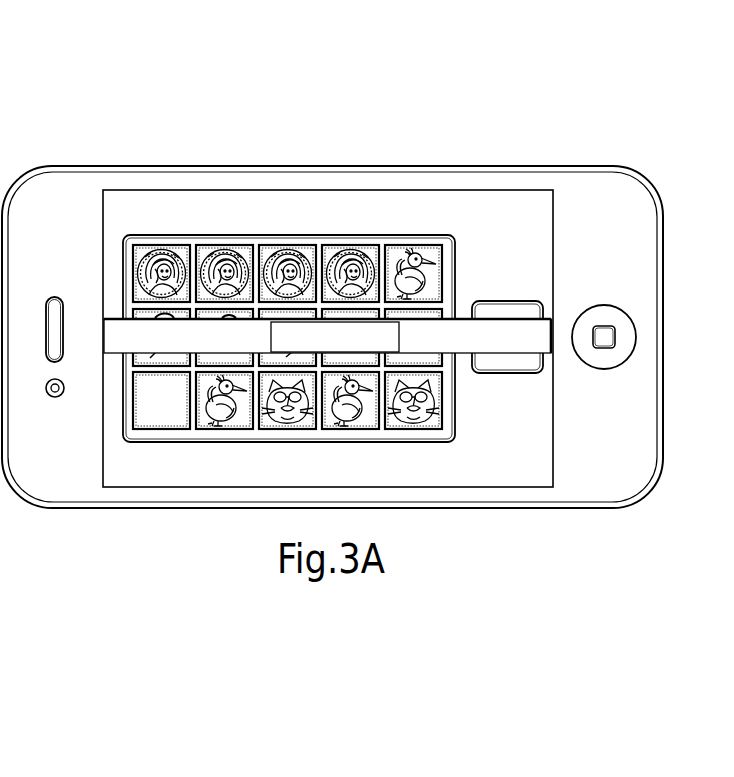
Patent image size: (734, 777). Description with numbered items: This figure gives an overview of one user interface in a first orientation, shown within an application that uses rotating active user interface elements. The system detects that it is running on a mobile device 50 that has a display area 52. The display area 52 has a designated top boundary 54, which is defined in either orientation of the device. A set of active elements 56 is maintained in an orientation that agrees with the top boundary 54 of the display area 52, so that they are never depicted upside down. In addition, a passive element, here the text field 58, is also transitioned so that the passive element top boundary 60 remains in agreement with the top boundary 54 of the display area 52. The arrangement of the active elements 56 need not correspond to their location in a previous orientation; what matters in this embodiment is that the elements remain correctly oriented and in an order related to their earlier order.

The mobile device 50 is at (88, 149).
The display area 52 is at (289, 269).
The top boundary 54 is at (462, 190).
The active elements 56 is at (408, 250).
The text field 58 is at (523, 330).
The passive element top boundary 60 is at (488, 318).